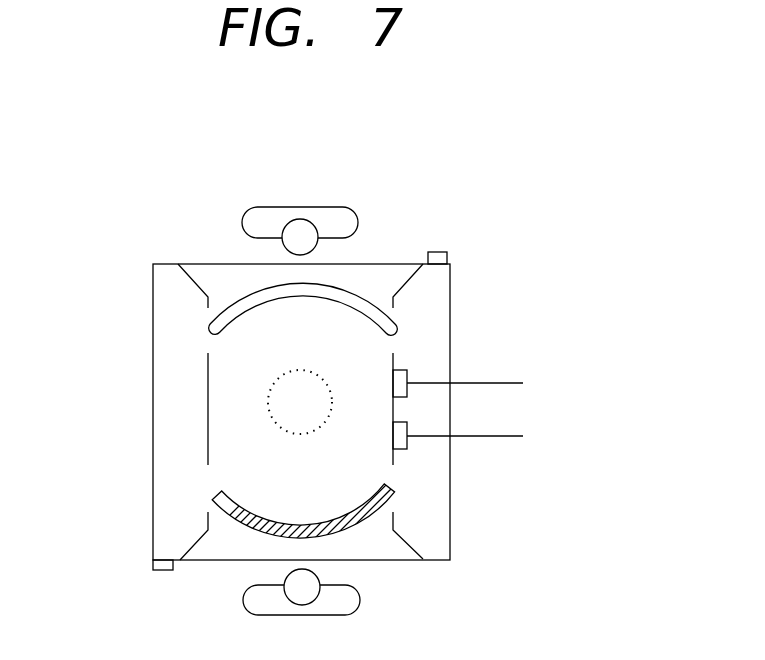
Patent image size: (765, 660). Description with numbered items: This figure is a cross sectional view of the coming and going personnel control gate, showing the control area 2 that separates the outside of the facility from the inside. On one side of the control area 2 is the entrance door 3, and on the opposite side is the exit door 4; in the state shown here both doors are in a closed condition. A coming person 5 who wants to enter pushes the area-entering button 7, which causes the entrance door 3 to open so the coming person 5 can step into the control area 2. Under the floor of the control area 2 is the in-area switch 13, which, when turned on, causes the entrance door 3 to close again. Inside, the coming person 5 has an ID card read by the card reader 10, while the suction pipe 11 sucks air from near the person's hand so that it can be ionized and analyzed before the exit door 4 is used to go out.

The control area 2 is at (167, 393).
The entrance door 3 is at (357, 305).
The exit door 4 is at (400, 502).
The coming person 5 is at (320, 216).
The area-entering button 7 is at (440, 257).
The card reader 10 is at (400, 449).
The suction pipe 11 is at (405, 371).
The in-area switch 13 is at (297, 415).